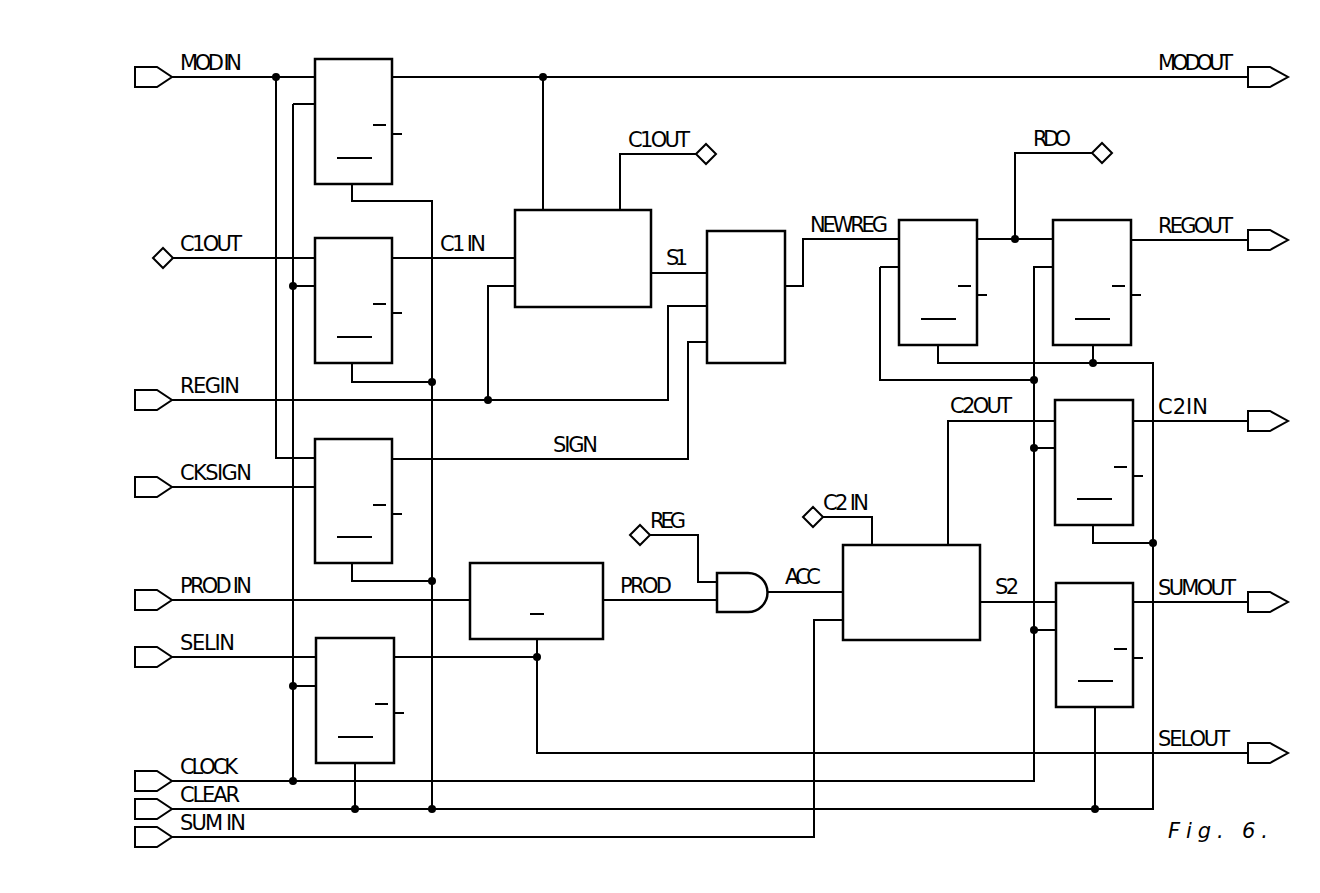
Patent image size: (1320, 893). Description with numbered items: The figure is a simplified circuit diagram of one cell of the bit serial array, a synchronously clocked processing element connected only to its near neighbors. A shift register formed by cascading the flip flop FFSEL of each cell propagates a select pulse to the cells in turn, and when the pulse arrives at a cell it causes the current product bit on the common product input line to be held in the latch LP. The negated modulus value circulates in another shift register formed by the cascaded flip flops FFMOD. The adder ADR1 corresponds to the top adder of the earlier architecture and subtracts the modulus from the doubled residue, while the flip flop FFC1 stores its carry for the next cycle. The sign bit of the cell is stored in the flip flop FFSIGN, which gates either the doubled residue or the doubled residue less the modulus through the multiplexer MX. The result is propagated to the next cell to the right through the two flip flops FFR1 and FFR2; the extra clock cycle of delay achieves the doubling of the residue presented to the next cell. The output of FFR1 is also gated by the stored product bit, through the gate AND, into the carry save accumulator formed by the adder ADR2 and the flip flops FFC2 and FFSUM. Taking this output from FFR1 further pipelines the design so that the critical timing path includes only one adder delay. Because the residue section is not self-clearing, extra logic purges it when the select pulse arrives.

The FFMOD flip flop FFMOD is at (358, 109).
The FFC1 flip flop FFC1 is at (358, 288).
The FFSIGN flip flop FFSIGN is at (358, 488).
The FFSEL flip flop FFSEL is at (360, 688).
The FFR1 flip flop FFR1 is at (943, 270).
The FFR2 flip flop FFR2 is at (1097, 270).
The FFC2 flip flop FFC2 is at (1099, 450).
The FFSUM flip flop FFSUM is at (1099, 632).
The adder ADR1 is at (583, 270).
The adder ADR2 is at (911, 605).
The multiplexer MX is at (746, 284).
The latch LP is at (536, 588).
The AND gate AND is at (742, 579).